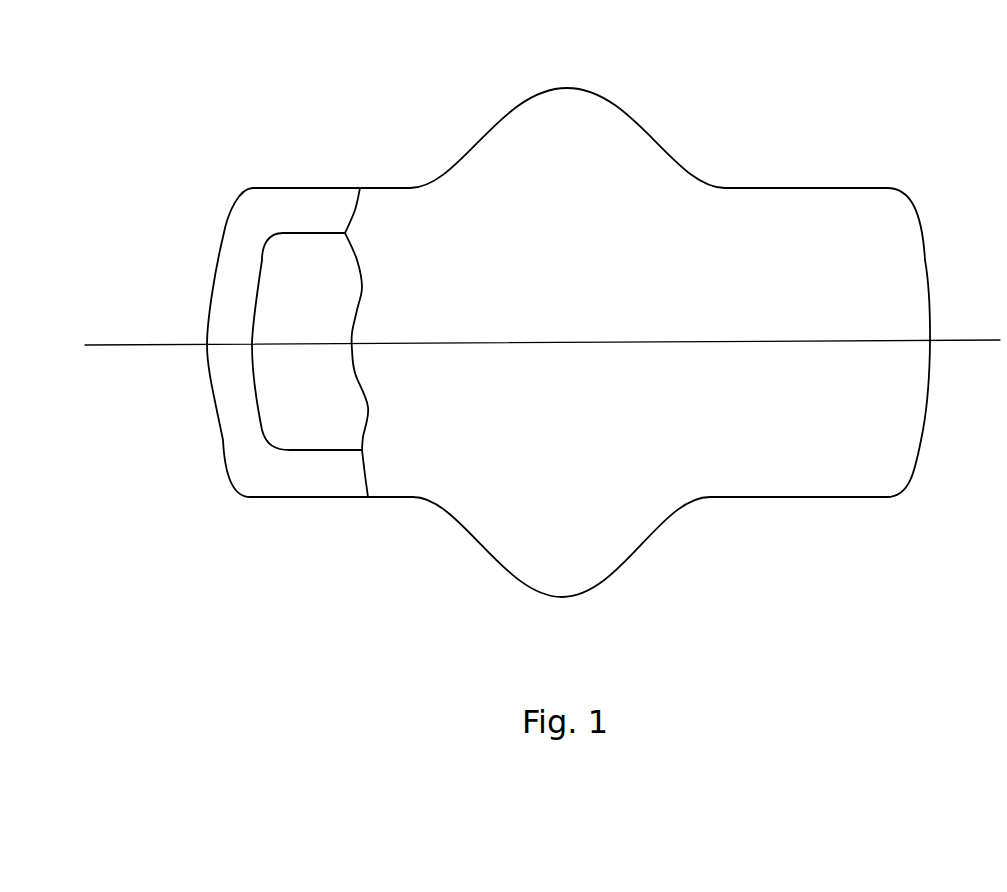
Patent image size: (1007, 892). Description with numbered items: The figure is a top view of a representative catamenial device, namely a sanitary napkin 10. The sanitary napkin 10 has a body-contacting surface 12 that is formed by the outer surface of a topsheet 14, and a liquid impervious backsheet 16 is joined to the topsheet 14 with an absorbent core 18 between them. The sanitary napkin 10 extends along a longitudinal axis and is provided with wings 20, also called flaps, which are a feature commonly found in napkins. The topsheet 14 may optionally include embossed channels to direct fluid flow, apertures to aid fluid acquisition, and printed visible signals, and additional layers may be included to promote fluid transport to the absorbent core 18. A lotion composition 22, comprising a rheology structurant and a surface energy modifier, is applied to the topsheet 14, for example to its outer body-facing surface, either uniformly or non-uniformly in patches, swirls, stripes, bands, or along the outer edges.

The sanitary napkin 10 is at (279, 159).
The body-contacting surface 12 is at (767, 255).
The topsheet 14 is at (570, 427).
The liquid impervious backsheet 16 is at (240, 237).
The absorbent core 18 is at (308, 247).
The wings 20 is at (592, 130).
The lotion composition 22 is at (743, 445).